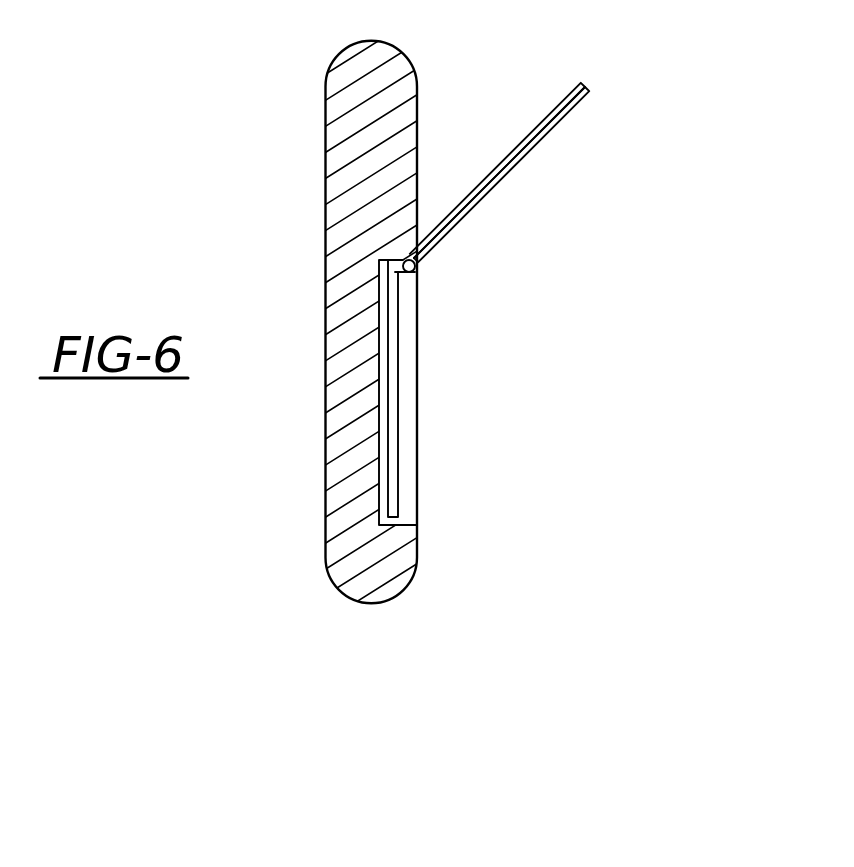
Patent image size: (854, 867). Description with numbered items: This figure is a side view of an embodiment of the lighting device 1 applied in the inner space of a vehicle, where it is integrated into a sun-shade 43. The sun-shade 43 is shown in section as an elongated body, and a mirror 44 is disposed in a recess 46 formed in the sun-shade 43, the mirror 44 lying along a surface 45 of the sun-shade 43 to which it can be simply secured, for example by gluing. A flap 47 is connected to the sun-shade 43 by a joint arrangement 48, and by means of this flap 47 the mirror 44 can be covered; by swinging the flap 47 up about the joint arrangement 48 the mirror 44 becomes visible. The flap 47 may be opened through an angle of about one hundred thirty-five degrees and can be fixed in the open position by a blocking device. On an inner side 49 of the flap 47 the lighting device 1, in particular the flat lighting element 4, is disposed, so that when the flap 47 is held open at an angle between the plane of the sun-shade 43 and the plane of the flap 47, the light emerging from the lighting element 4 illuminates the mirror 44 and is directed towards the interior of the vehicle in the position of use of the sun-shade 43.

The lighting device 1 is at (590, 119).
The lighting element 4 is at (524, 152).
The sun-shade 43 is at (330, 137).
The mirror 44 is at (400, 393).
The surface 45 is at (420, 495).
The recess 46 is at (430, 467).
The flap 47 is at (520, 133).
The joint arrangement 48 is at (423, 268).
The inner side 49 is at (477, 203).